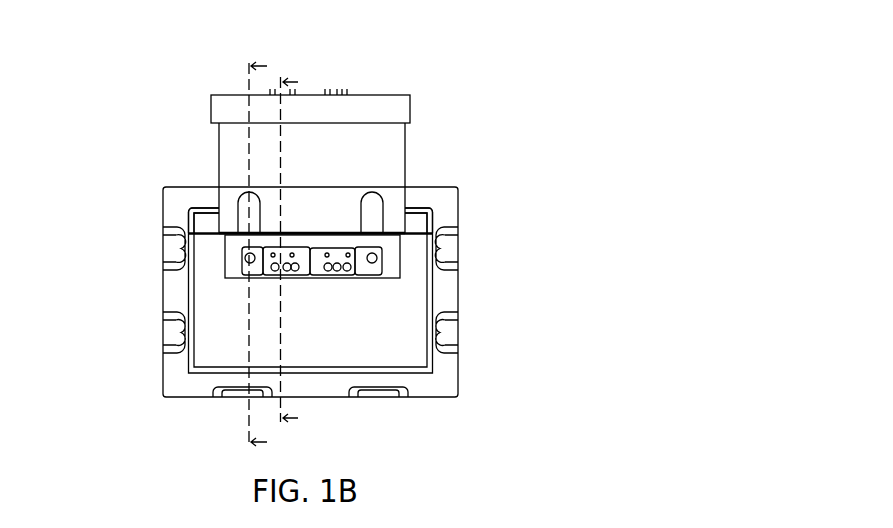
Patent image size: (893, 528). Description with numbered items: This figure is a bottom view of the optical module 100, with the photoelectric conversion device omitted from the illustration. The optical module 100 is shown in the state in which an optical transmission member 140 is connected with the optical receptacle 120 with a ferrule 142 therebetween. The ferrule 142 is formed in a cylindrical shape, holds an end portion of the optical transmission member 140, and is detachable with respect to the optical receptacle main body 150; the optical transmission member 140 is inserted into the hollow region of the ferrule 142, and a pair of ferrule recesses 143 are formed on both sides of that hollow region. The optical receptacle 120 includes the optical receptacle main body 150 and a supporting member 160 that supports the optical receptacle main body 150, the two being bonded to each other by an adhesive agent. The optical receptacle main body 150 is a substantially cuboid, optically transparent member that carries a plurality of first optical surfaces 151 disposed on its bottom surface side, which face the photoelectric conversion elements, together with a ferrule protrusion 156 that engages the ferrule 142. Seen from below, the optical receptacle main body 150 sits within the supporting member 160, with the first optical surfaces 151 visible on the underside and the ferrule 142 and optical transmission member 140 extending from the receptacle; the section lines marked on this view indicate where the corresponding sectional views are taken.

The optical module 100 is at (506, 90).
The optical receptacle 120 is at (97, 282).
The optical transmission member 140 is at (347, 93).
The ferrule 142 is at (241, 141).
The ferrule recess 143 is at (238, 198).
The optical receptacle main body 150 is at (240, 279).
The first optical surface 151 is at (345, 267).
The ferrule protrusion 156 is at (202, 211).
The supporting member 160 is at (170, 322).